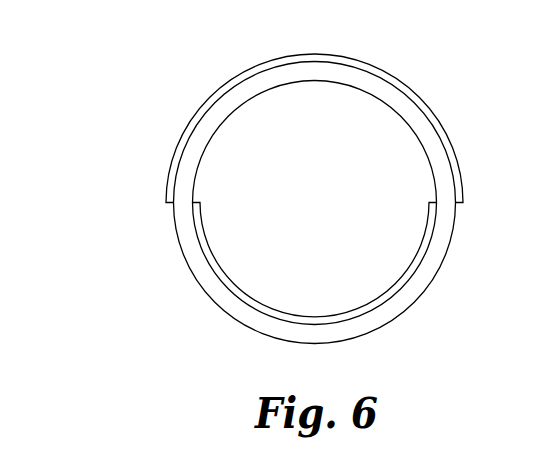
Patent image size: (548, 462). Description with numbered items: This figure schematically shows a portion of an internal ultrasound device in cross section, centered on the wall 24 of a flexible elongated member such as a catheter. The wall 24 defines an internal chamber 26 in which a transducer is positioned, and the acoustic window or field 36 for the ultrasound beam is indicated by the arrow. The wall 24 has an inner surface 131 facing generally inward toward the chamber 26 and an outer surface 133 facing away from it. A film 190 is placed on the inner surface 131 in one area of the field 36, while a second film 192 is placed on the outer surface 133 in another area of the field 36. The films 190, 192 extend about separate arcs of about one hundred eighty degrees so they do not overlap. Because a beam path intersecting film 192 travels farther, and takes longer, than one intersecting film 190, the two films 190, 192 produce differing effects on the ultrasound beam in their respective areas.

The acoustic window or field 36 is at (269, 190).
The internal chamber 26 is at (323, 207).
The wall 24 is at (341, 213).
The inner surface 131 is at (433, 180).
The outer surface 133 is at (410, 310).
The film 190 is at (257, 305).
The film 192 is at (387, 73).